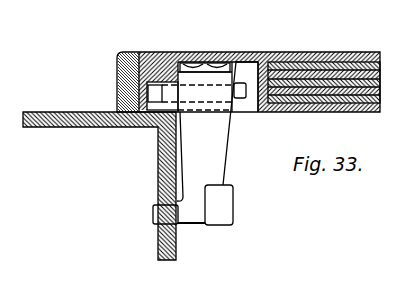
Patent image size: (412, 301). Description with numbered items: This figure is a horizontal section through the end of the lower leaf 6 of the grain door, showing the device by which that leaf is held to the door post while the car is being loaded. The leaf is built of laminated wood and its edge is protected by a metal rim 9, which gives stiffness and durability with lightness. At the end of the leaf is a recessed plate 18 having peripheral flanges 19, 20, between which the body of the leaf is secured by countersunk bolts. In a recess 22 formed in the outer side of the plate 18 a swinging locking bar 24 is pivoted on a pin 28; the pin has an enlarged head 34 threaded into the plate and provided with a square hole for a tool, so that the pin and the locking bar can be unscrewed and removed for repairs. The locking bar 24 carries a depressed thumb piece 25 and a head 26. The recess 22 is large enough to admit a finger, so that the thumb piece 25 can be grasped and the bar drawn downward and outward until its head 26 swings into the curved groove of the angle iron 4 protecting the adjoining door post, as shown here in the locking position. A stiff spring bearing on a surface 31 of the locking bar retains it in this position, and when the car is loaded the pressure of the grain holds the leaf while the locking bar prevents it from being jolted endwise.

The angle iron 4 is at (68, 127).
The lower leaf 6 is at (372, 85).
The metal rim 9 is at (131, 47).
The recessed plate 18 is at (176, 47).
The peripheral flange 19 is at (303, 113).
The peripheral flange 20 is at (288, 60).
The recess 22 is at (253, 99).
The swinging locking bar 24 is at (218, 146).
The depressed thumb piece 25 is at (230, 206).
The head 26 is at (151, 218).
The pin 28 is at (241, 82).
The surface 31 is at (213, 60).
The enlarged head 34 is at (130, 79).